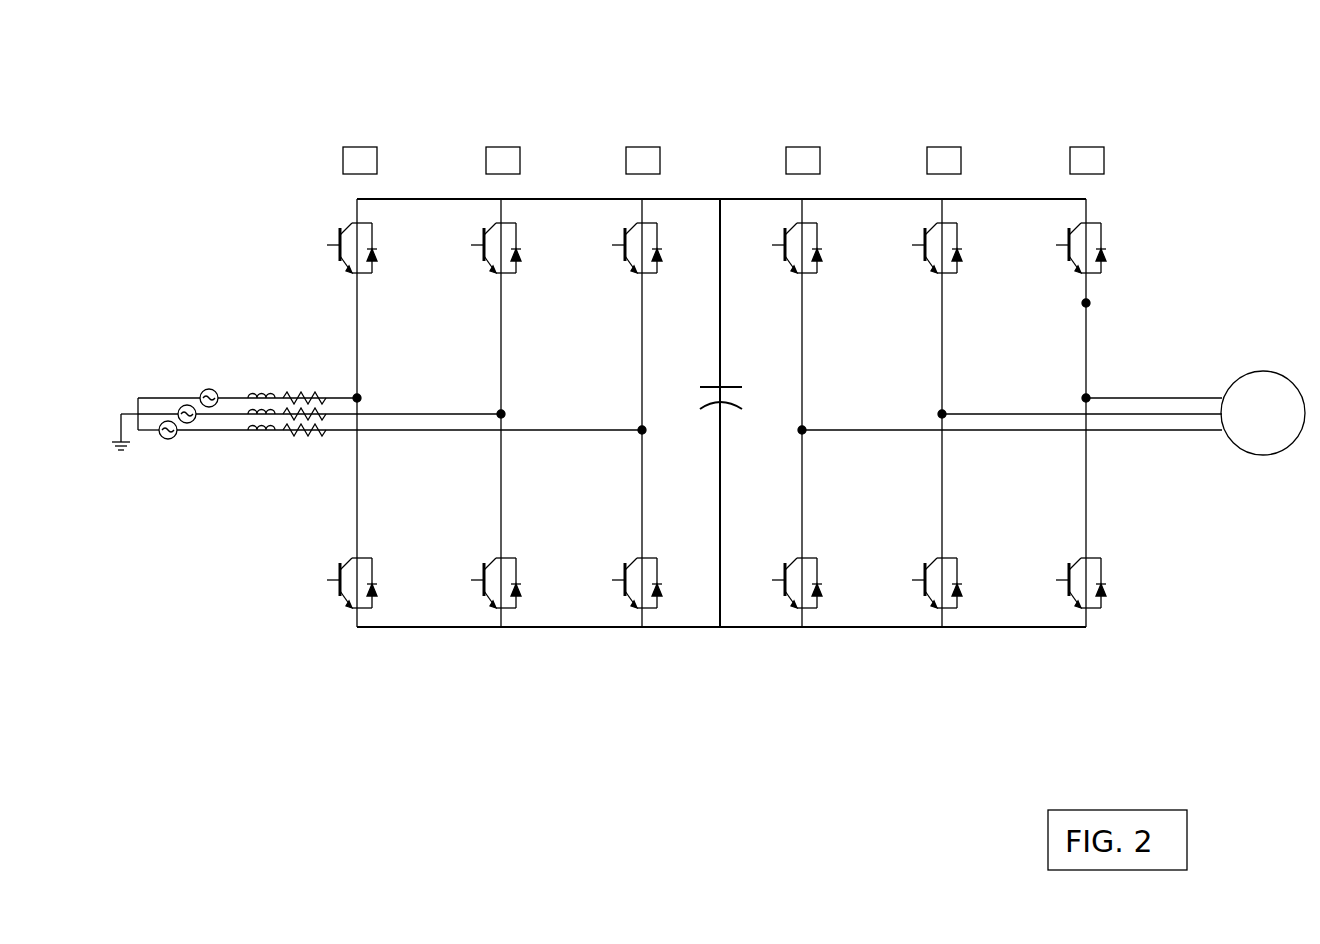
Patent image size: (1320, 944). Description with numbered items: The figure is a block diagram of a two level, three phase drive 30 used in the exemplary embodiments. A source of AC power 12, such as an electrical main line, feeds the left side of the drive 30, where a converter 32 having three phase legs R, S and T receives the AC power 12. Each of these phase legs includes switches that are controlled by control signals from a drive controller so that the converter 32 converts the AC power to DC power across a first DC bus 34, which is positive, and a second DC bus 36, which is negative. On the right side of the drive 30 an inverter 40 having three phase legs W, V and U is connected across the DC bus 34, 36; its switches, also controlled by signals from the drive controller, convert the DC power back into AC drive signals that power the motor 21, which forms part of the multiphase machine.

The source of AC power 12 is at (157, 384).
The motor 21 is at (1258, 372).
The drive 30 is at (764, 418).
The converter 32 is at (491, 671).
The first DC bus 34 is at (422, 199).
The second DC bus 36 is at (668, 627).
The inverter 40 is at (941, 679).